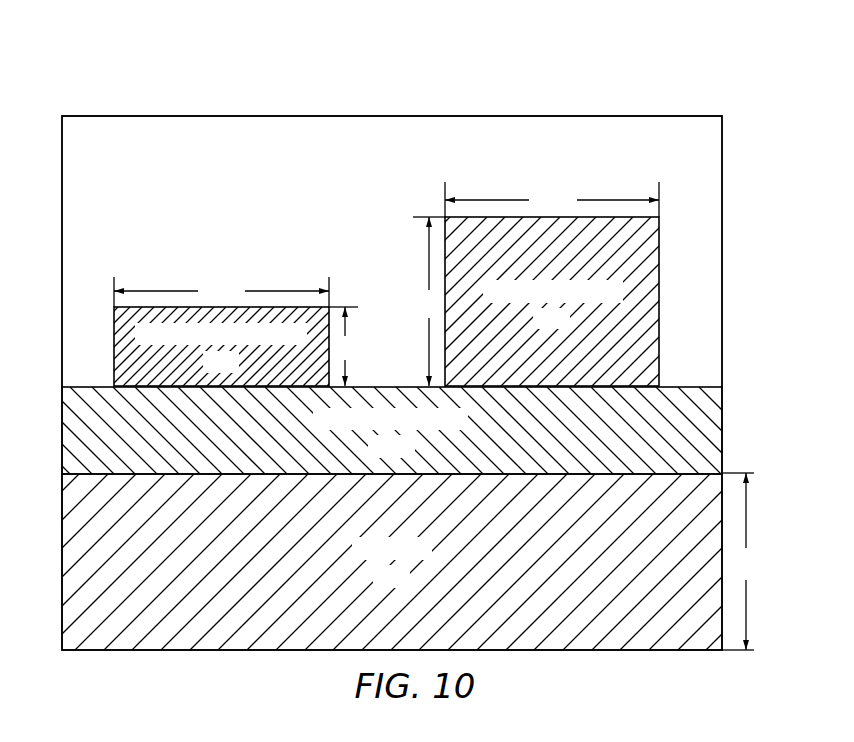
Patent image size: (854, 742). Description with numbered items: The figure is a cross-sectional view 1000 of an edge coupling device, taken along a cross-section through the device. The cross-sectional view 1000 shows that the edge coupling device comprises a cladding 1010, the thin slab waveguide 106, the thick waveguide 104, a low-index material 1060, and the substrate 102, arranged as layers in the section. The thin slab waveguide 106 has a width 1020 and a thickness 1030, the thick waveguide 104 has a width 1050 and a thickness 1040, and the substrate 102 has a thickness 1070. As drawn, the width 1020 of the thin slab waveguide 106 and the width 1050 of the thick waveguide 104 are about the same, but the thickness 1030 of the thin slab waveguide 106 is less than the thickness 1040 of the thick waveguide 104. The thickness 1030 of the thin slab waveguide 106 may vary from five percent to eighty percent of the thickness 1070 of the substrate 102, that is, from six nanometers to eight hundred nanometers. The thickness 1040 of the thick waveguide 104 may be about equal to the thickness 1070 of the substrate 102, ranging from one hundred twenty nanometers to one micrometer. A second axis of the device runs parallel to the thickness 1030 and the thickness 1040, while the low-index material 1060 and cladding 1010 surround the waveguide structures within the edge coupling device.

The cross-sectional view 1000 is at (189, 64).
The cladding 1010 is at (147, 181).
The thin slab waveguide 106 is at (206, 371).
The thick waveguide 104 is at (537, 327).
The low-index material 1060 is at (412, 456).
The substrate 102 is at (377, 586).
The width 1020 is at (221, 292).
The thickness 1030 is at (351, 346).
The thickness 1040 is at (423, 301).
The width 1050 is at (552, 199).
The thickness 1070 is at (743, 561).